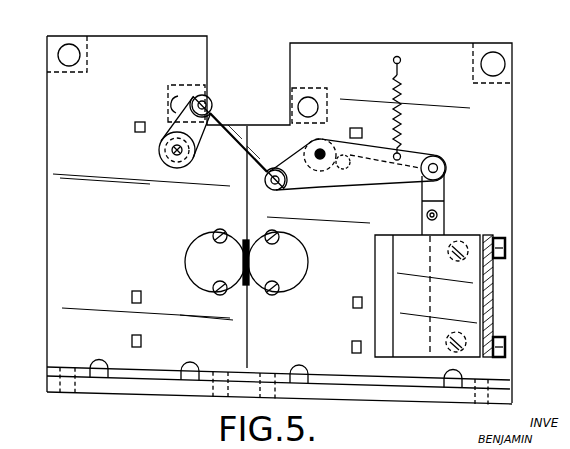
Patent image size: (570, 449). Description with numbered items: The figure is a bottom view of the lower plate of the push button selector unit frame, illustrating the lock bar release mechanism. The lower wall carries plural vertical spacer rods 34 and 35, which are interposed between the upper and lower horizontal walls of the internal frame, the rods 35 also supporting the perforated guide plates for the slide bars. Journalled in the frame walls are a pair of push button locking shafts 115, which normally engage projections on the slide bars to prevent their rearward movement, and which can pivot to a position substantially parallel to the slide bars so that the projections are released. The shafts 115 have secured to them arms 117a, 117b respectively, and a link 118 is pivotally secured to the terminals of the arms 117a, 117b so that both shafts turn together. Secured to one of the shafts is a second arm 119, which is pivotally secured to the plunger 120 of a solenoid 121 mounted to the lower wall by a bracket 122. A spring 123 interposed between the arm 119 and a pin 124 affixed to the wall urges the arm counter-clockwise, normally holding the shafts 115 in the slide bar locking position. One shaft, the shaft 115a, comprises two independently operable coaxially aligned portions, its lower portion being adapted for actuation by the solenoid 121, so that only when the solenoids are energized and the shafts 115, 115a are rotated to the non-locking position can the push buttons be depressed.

The vertical spacer rod 34 is at (89, 52).
The vertical spacer rod 35 is at (186, 89).
The push button locking shaft 115 is at (173, 150).
The locking shaft 115a is at (323, 162).
The arm 117a is at (189, 144).
The arm 117b is at (299, 181).
The link 118 is at (220, 124).
The second arm 119 is at (372, 148).
The plunger 120 is at (442, 189).
The solenoid 121 is at (406, 248).
The bracket 122 is at (488, 238).
The spring 123 is at (402, 118).
The pin 124 is at (401, 60).